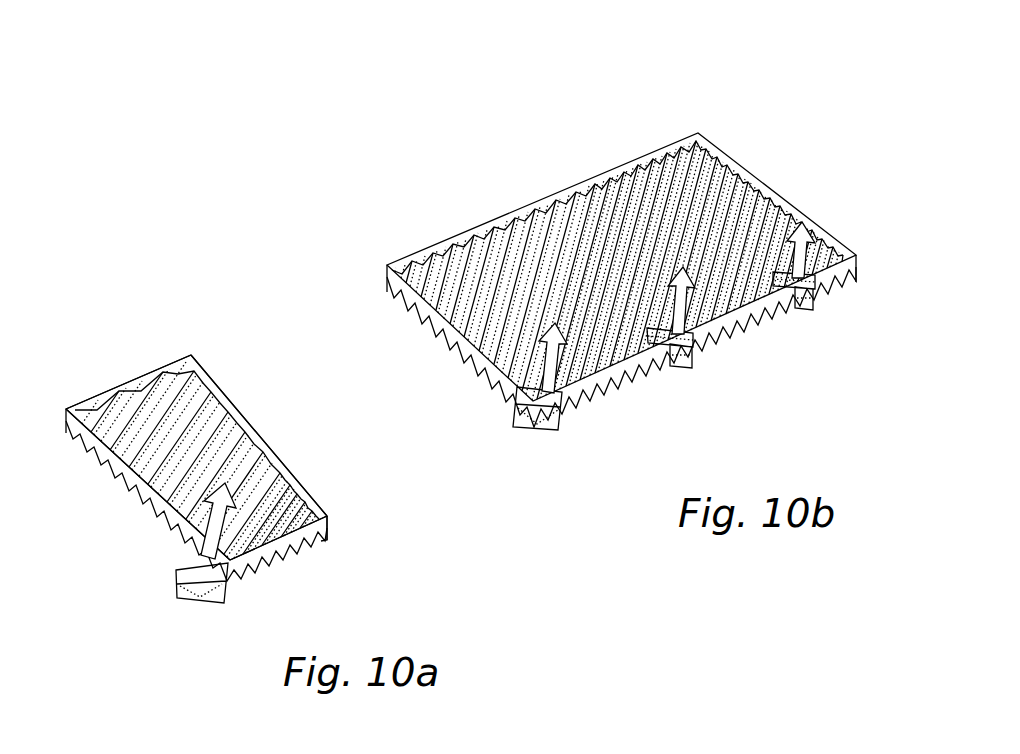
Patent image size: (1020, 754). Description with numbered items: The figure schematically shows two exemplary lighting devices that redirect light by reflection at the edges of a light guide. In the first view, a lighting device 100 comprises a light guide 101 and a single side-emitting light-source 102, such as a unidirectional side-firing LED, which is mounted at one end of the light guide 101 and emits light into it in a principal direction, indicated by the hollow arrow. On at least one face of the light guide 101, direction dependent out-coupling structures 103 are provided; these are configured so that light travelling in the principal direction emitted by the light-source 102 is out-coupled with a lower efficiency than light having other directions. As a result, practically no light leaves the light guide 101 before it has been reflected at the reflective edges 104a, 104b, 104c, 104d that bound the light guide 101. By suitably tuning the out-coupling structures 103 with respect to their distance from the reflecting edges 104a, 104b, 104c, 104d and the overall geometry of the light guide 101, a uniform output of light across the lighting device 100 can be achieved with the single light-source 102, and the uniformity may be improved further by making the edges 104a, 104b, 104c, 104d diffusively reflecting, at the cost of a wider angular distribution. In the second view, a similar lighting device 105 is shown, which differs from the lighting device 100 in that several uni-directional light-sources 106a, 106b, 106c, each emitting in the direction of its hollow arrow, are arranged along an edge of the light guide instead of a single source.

In FIG. 10A, the lighting device 100 is at (203, 300).
In FIG. 10A, the light guide 101 is at (108, 508).
In FIG. 10A, the side-emitting light-source 102 is at (201, 596).
In FIG. 10A, the direction dependent out-coupling structures 103 is at (320, 545).
In FIG. 10A, the reflective edge 104a is at (147, 525).
In FIG. 10A, the reflective edge 104b is at (162, 367).
In FIG. 10A, the reflective edge 104c is at (230, 398).
In FIG. 10A, the reflective edge 104d is at (275, 558).
In FIG. 10B, the lighting device 105 is at (629, 97).
In FIG. 10B, the uni-directional light-source 106a is at (536, 424).
In FIG. 10B, the uni-directional light-source 106b is at (693, 368).
In FIG. 10B, the uni-directional light-source 106c is at (812, 312).